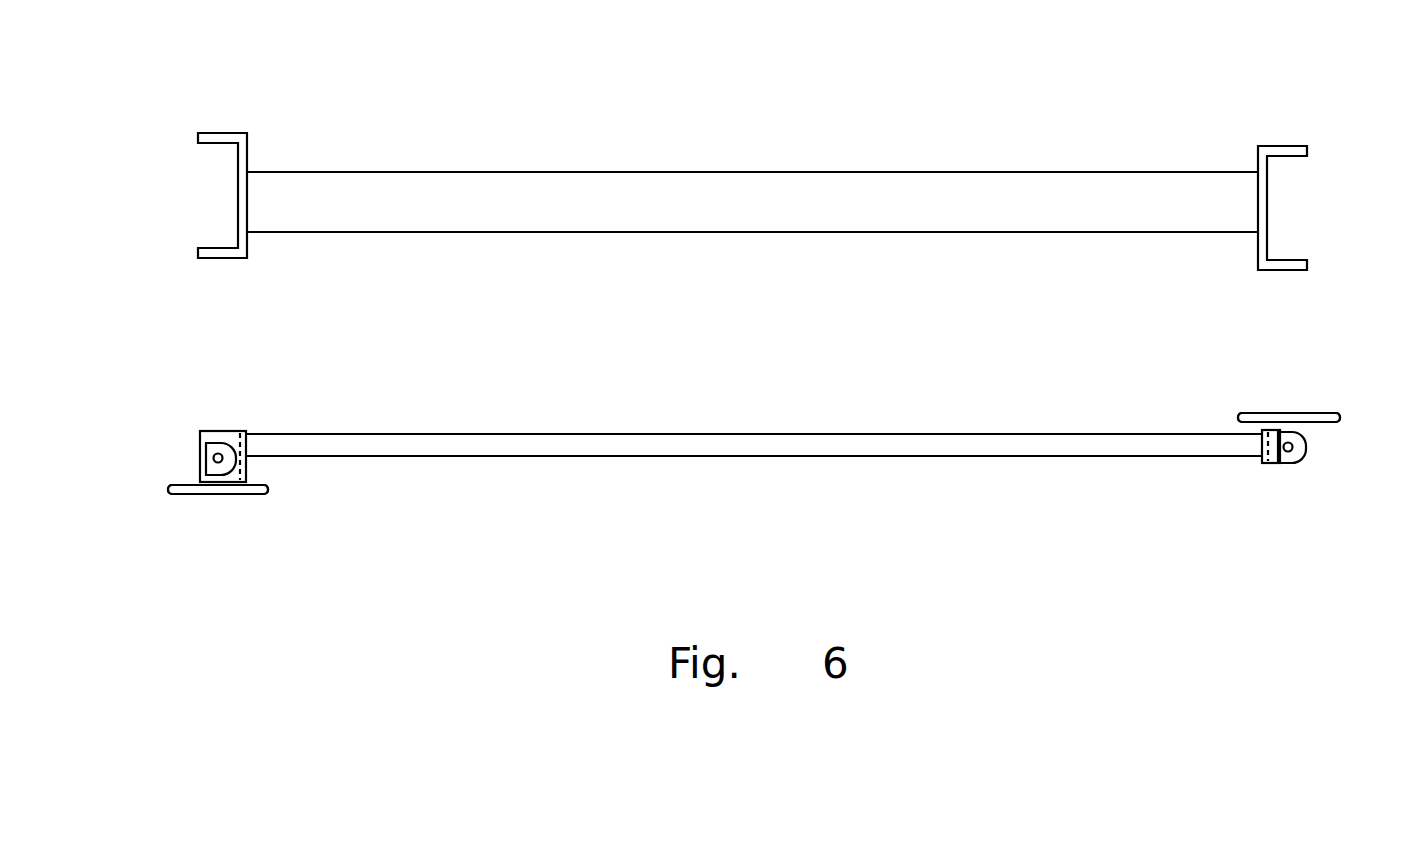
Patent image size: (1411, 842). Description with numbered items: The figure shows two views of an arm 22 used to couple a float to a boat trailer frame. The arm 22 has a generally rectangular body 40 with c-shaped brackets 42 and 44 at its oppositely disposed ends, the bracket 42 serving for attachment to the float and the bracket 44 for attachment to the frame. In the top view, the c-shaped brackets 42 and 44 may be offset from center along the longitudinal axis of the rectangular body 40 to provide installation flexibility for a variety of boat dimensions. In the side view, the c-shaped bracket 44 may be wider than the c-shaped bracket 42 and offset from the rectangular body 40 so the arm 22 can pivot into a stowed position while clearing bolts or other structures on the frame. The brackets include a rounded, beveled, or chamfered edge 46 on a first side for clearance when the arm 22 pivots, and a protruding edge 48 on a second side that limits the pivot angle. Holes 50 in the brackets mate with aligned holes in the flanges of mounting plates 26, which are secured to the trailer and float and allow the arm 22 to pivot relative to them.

The arm 22 is at (514, 172).
The mounting plate 26 is at (226, 494).
The rectangular body 40 is at (861, 172).
The c-shaped bracket 42 is at (1290, 146).
The c-shaped bracket 44 is at (212, 133).
The chamfered edge 46 is at (205, 494).
The protruding edge 48 is at (207, 451).
The hole 50 is at (213, 456).